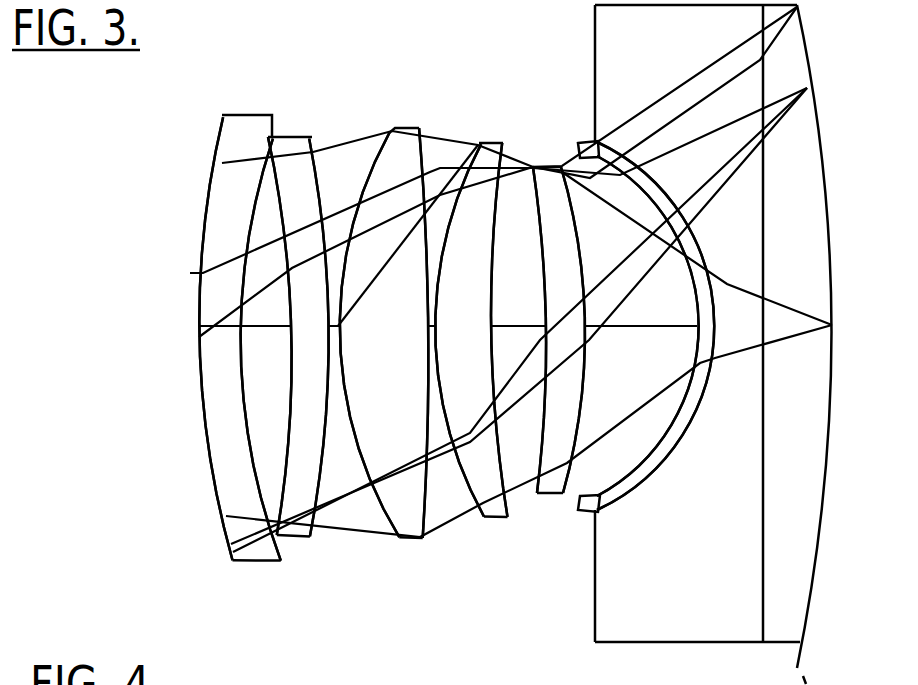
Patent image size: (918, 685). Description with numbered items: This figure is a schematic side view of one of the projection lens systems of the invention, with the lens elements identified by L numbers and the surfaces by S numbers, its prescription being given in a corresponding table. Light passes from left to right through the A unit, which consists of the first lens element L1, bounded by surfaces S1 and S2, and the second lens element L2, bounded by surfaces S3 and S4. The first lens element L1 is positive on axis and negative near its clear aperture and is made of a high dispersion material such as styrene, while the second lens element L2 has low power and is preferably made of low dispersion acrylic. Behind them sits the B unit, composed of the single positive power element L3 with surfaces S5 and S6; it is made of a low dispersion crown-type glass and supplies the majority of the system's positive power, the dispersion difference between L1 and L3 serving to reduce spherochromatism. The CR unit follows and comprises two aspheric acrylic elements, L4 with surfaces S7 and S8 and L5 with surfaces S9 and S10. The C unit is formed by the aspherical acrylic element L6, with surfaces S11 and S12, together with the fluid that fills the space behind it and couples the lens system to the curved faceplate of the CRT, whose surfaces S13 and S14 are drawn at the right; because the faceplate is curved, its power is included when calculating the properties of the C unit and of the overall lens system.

The first lens element L1 is at (232, 132).
The second lens element L2 is at (293, 146).
The third lens element L3 is at (393, 160).
The aspheric lens element L4 is at (479, 150).
The aspheric lens element L5 is at (535, 166).
The aspherical lens element L6 is at (592, 152).
The surface S1 is at (207, 420).
The surface S2 is at (247, 452).
The surface S3 is at (273, 478).
The surface S4 is at (320, 500).
The surface S5 is at (380, 520).
The surface S6 is at (430, 541).
The surface S7 is at (470, 520).
The surface S8 is at (502, 520).
The surface S9 is at (541, 497).
The surface S10 is at (590, 512).
The surface S11 is at (647, 463).
The surface S12 is at (600, 518).
The surface S13 is at (765, 600).
The surface S14 is at (812, 585).